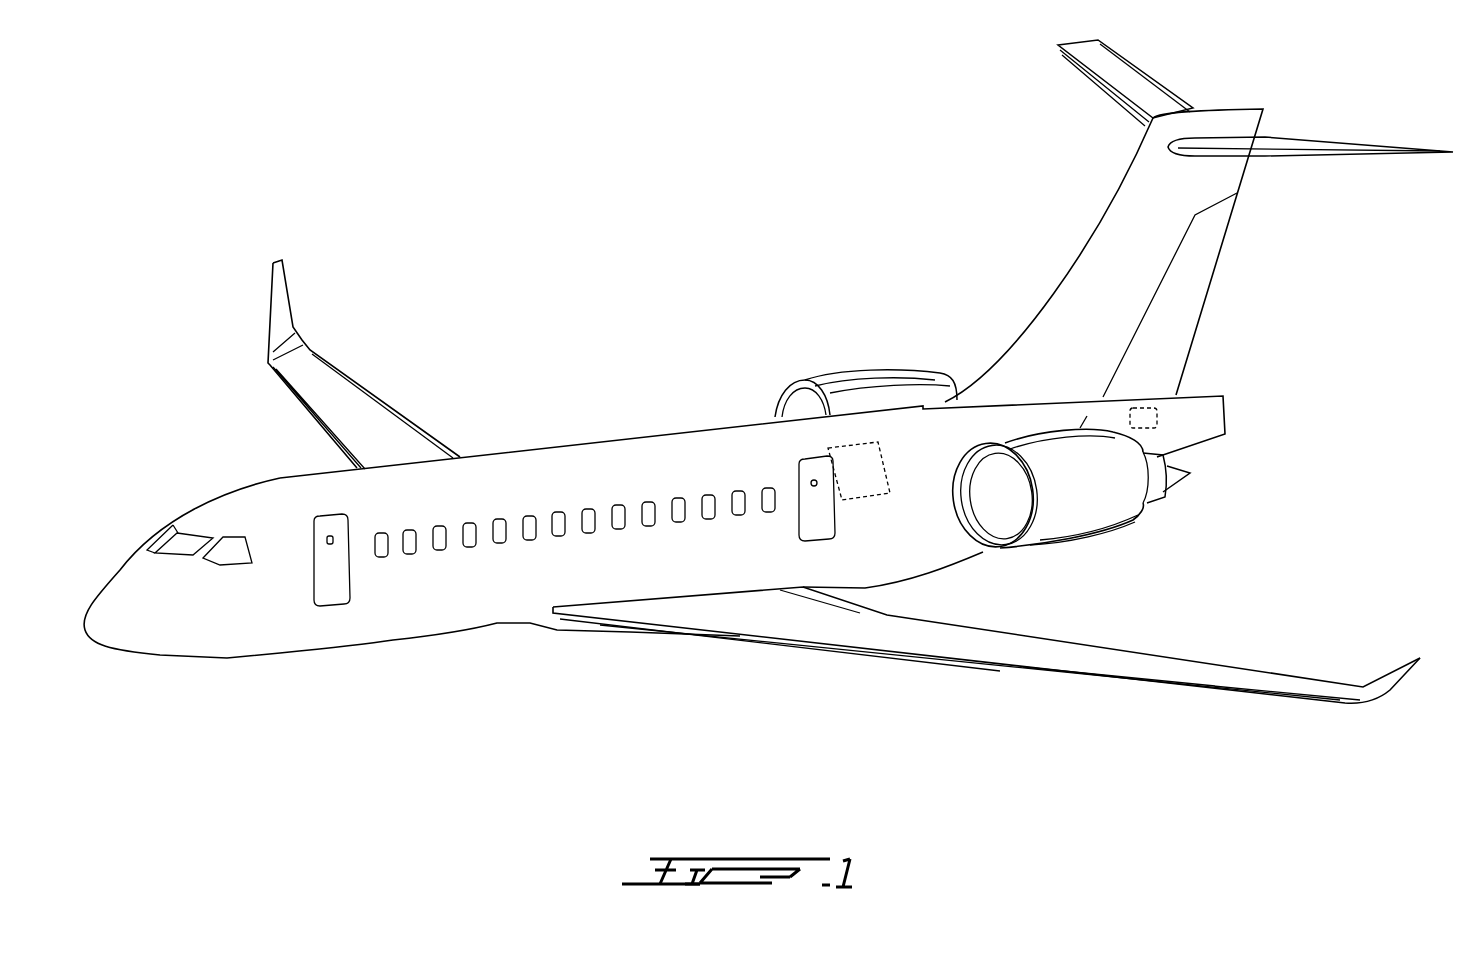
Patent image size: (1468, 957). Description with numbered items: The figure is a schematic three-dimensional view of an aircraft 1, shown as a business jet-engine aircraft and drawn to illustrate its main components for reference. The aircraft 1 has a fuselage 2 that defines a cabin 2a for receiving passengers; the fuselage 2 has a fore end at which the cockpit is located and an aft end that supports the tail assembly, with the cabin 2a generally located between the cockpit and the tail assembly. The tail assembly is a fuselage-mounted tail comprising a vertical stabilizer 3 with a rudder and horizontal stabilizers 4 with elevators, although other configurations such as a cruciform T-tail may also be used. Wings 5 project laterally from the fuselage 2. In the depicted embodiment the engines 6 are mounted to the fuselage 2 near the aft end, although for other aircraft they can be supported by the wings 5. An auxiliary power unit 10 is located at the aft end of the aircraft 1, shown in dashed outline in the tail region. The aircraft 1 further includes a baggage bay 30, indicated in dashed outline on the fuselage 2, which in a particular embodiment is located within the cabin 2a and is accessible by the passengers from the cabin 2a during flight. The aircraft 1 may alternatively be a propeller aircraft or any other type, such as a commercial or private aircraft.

The aircraft 1 is at (625, 343).
The fuselage 2 is at (654, 568).
The cabin 2a is at (403, 608).
The vertical stabilizer 3 is at (1143, 250).
The horizontal stabilizers 4 is at (1097, 70).
The wings 5 is at (348, 405).
The engines 6 is at (868, 390).
The auxiliary power unit 10 is at (1157, 418).
The baggage bay 30 is at (858, 478).